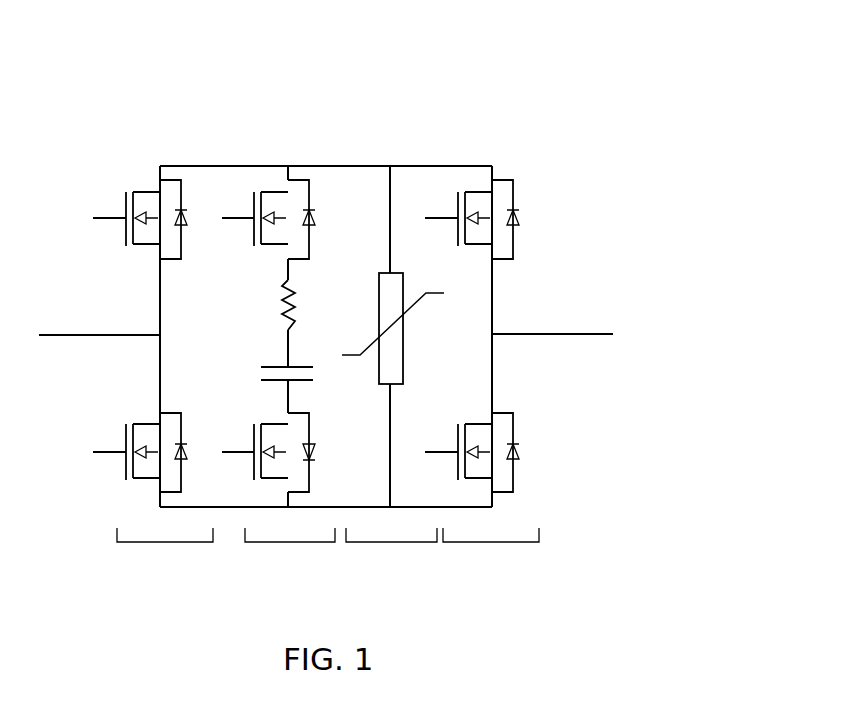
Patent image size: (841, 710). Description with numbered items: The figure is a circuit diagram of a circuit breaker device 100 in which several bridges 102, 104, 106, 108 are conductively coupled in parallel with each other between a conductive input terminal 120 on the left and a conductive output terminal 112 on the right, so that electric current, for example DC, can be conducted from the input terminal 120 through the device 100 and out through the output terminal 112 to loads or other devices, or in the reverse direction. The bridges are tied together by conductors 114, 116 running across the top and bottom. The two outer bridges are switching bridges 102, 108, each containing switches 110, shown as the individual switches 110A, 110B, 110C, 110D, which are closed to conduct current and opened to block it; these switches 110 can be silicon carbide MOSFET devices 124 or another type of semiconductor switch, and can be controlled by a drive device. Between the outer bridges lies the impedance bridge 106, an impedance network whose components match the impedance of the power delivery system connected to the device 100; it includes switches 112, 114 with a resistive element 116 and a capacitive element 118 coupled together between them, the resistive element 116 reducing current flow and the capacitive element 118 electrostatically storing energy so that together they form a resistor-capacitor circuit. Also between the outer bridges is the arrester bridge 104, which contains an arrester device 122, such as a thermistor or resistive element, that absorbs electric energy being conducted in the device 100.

The circuit breaker device 100 is at (475, 80).
The switching bridge 102 is at (492, 542).
The arrester bridge 104 is at (392, 542).
The impedance bridge 106 is at (290, 542).
The switching bridge 108 is at (167, 542).
The switch 110 is at (517, 174).
The switch 110A is at (514, 192).
The switch 110B is at (514, 425).
The switch 110C is at (140, 190).
The switch 110D is at (140, 423).
The output terminal 112 is at (310, 192).
The switch 114 is at (310, 476).
The resistive element 116 is at (297, 295).
The capacitive element 118 is at (302, 382).
The input terminal 120 is at (68, 337).
The arrester device 122 is at (403, 352).
The silicon carbide MOSFET device 124 is at (123, 224).